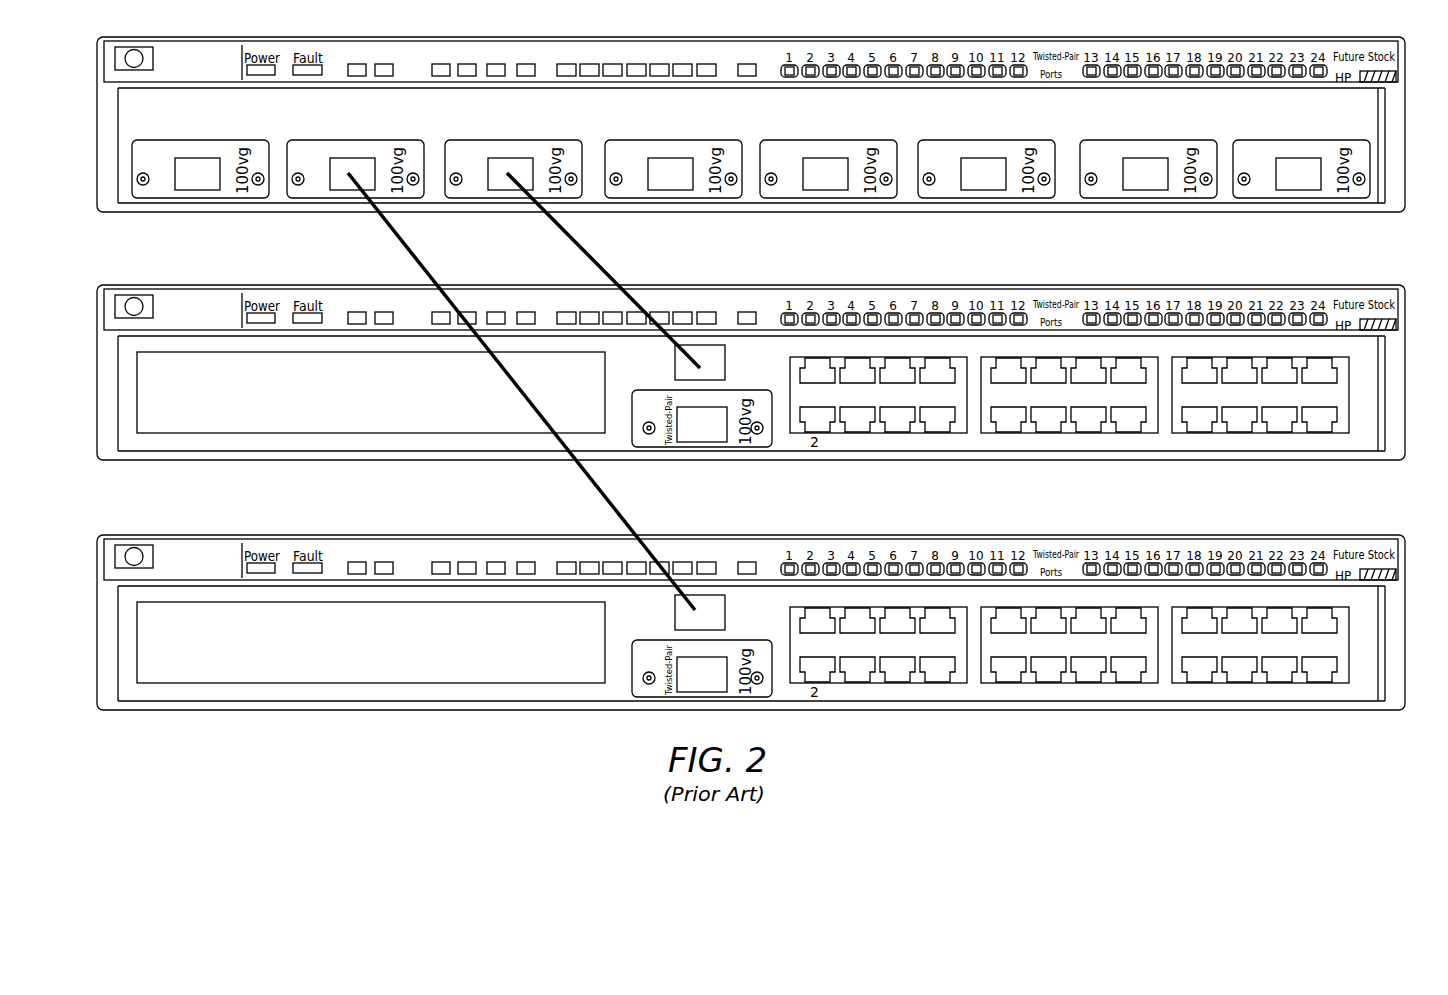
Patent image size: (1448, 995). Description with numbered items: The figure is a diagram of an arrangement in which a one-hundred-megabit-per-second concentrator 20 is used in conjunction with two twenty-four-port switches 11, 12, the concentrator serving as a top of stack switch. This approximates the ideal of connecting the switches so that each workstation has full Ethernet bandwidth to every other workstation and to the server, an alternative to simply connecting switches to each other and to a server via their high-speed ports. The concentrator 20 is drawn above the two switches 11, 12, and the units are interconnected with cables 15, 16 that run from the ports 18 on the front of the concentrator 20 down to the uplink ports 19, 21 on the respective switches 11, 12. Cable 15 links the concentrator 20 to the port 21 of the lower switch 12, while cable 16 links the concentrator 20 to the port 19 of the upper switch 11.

The switch 11 is at (772, 381).
The switch 12 is at (772, 632).
The cable 15 is at (395, 233).
The cable 16 is at (610, 272).
The port 18 is at (337, 148).
The port 19 is at (712, 352).
The 100 Mbs concentrator 20 is at (771, 152).
The port 21 is at (718, 605).